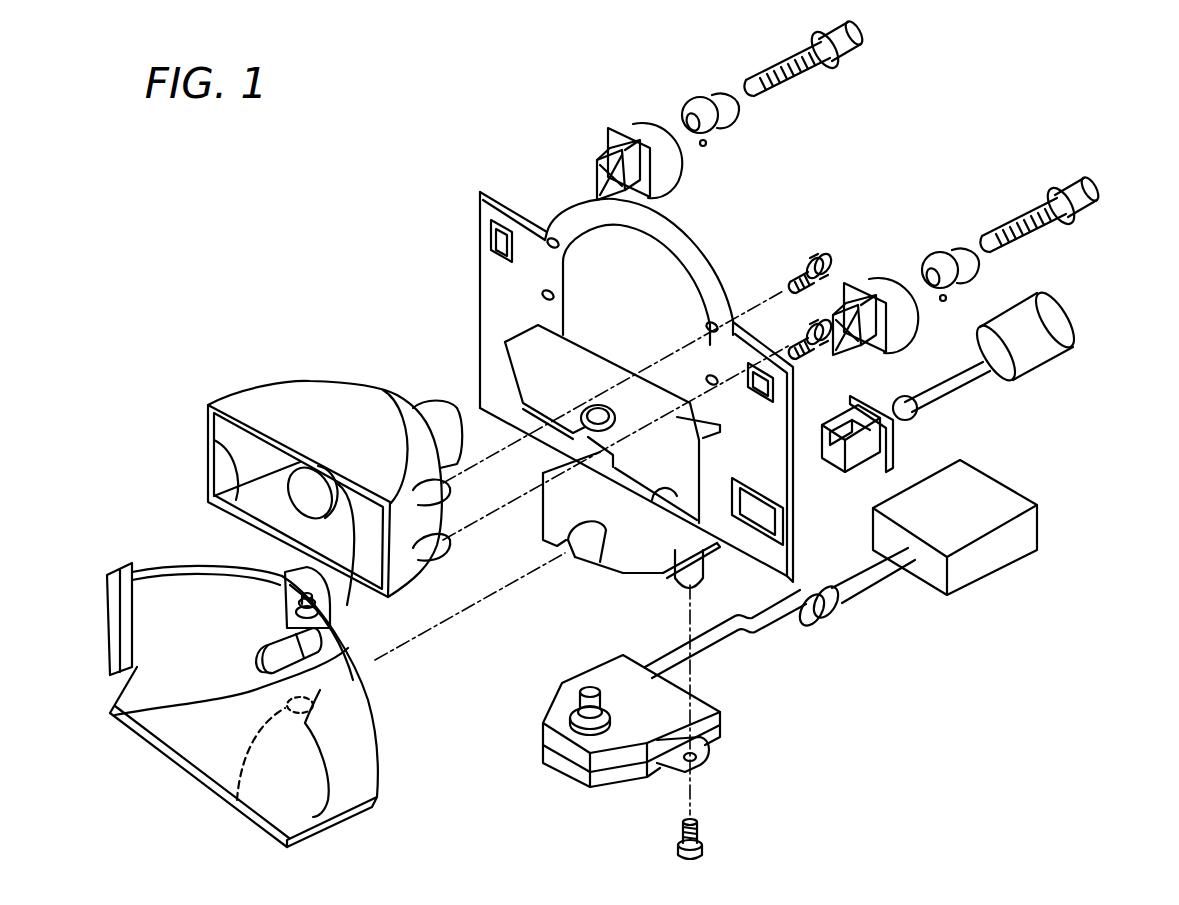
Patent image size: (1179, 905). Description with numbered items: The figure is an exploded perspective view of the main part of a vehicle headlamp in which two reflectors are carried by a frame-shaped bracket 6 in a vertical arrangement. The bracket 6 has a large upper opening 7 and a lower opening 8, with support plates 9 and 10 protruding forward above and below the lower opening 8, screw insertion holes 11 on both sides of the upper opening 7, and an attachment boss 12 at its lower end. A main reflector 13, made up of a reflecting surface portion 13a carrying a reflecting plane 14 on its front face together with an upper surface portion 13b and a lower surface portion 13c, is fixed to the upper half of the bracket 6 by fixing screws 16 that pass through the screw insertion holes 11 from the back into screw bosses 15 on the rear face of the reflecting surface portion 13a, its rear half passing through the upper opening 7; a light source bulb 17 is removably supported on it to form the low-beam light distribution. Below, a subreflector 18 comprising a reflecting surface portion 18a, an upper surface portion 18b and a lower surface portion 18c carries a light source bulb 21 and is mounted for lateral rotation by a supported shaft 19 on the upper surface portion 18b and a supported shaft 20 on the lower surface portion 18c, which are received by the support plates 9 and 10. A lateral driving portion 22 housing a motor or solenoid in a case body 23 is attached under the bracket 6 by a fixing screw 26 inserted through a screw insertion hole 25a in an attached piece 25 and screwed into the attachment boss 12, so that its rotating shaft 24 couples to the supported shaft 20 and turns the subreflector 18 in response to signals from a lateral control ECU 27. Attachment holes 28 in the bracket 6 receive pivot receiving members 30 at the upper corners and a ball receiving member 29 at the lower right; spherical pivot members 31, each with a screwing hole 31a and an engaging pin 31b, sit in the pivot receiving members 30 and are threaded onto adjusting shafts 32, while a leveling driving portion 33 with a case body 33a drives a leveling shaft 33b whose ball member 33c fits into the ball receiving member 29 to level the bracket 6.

The bracket 6 is at (483, 194).
The upper opening 7 is at (705, 268).
The lower opening 8 is at (625, 563).
The support plate 9 is at (520, 356).
The support plate 10 is at (600, 555).
The screw insertion holes 11 is at (553, 238).
The attachment boss 12 is at (690, 577).
The main reflector 13 is at (308, 475).
The reflecting surface portion 13a is at (405, 577).
The upper surface portion 13b is at (248, 400).
The lower surface portion 13c is at (243, 500).
The reflecting plane 14 is at (215, 442).
The screw boss 15 is at (447, 493).
The fixing screws 16 is at (800, 262).
The light source bulb 17 is at (350, 497).
The subreflector 18 is at (253, 672).
The reflecting surface portion 18a is at (370, 737).
The upper surface portion 18b is at (270, 590).
The lower surface portion 18c is at (190, 745).
The supported shaft 19 is at (296, 568).
The supported shaft 20 is at (232, 800).
The light source bulb 21 is at (262, 667).
The lateral driving portion 22 is at (600, 782).
The case body 23 is at (725, 714).
The rotating shaft 24 is at (574, 706).
The attached piece 25 is at (722, 793).
The screw insertion hole 25a is at (688, 767).
The fixing screw 26 is at (702, 835).
The lateral control ECU 27 is at (1000, 577).
The attachment holes 28 is at (492, 252).
The ball receiving member 29 is at (883, 442).
The pivot receiving member 30 is at (640, 130).
The pivot member 31 is at (822, 196).
The screwing hole 31a is at (688, 118).
The engaging pin 31b is at (706, 142).
The adjusting shaft 32 is at (852, 48).
The leveling driving portion 33 is at (1023, 367).
The case body 33a is at (1057, 297).
The leveling shaft 33b is at (950, 382).
The ball member 33c is at (918, 412).